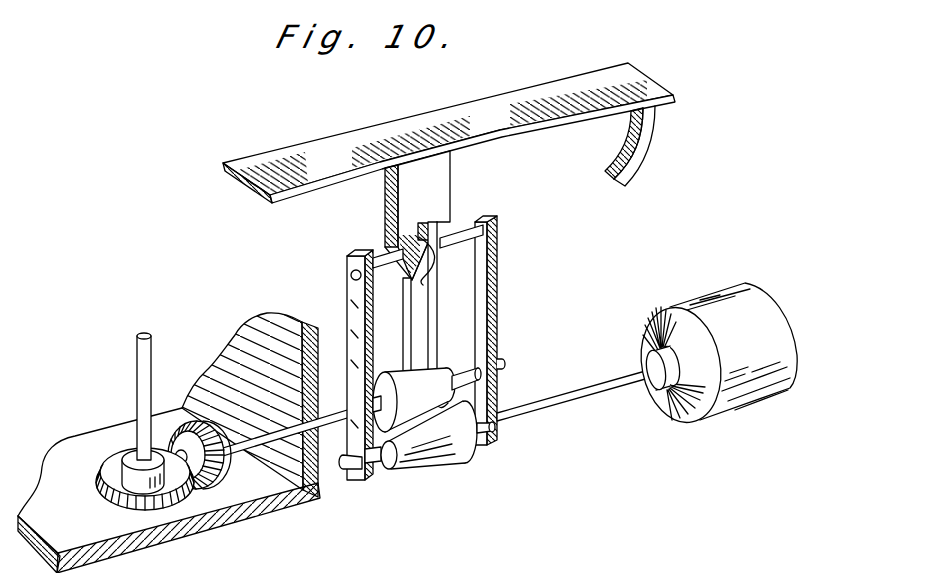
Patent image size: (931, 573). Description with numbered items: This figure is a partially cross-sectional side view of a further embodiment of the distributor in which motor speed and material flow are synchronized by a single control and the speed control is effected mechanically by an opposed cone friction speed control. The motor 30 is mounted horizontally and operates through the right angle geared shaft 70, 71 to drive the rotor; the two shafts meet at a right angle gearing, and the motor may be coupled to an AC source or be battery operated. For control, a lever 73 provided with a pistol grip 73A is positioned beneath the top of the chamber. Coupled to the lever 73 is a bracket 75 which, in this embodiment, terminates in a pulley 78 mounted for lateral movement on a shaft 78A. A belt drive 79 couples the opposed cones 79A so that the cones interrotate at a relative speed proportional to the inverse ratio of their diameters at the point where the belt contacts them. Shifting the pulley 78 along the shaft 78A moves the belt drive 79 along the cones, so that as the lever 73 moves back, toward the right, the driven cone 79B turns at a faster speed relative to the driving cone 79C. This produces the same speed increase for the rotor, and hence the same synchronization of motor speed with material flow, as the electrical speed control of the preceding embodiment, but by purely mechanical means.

The motor 30 is at (737, 283).
The right angle geared shaft 70 is at (599, 395).
The right angle geared shaft 71 is at (137, 352).
The lever 73 is at (532, 88).
The pistol grip 73A is at (638, 153).
The bracket 75 is at (442, 186).
The pulley 78 is at (497, 263).
The shaft 78A is at (384, 260).
The belt drive 79 is at (432, 307).
The opposed cones 79A is at (447, 363).
The driven cone 79B is at (385, 368).
The driving cone 79C is at (452, 464).